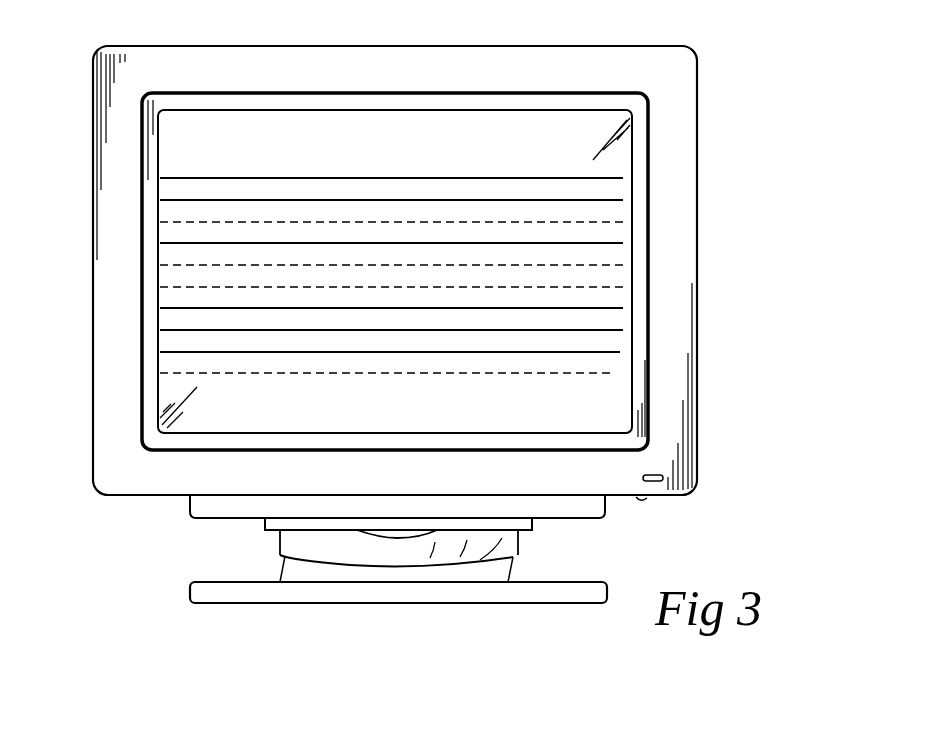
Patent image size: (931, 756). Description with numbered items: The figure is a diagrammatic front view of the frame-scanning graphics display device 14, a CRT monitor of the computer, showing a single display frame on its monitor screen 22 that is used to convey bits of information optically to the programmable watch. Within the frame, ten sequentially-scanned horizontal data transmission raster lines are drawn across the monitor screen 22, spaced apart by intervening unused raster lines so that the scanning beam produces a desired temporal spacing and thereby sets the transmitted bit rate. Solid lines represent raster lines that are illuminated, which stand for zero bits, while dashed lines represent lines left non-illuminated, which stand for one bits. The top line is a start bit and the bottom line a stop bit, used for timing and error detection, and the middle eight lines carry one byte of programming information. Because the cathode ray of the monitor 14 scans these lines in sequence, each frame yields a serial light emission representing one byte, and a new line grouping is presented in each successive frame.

The frame-scanning graphics display device 14 is at (618, 486).
The monitor screen 22 is at (573, 127).